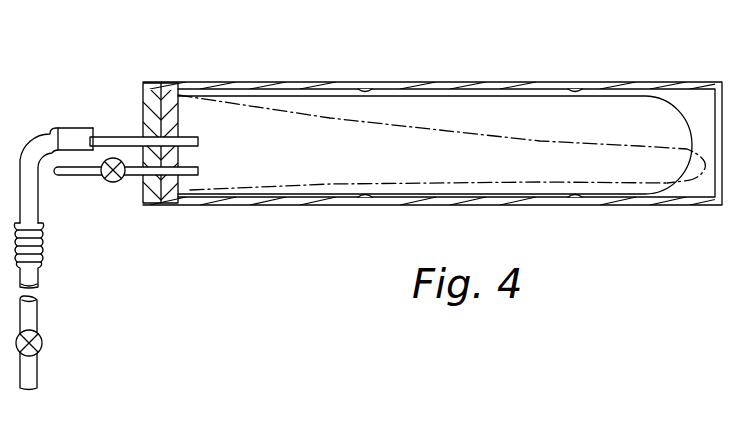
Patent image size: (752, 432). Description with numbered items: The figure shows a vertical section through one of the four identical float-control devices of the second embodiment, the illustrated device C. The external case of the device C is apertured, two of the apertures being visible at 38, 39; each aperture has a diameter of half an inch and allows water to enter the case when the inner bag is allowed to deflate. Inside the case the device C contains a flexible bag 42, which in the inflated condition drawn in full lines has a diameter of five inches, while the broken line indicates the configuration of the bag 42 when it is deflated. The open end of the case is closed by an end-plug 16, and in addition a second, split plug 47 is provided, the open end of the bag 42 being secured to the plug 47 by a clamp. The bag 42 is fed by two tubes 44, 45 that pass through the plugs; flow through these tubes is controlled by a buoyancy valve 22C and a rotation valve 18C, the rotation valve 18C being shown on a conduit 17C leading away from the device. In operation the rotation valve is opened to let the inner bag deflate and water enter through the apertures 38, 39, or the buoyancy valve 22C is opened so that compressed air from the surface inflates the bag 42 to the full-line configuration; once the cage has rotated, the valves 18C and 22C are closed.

The control device C is at (271, 62).
The end-plug 16 is at (143, 102).
The split plug 47 is at (171, 91).
The tube 45 is at (109, 136).
The tube 44 is at (85, 175).
The buoyancy valve 22C is at (114, 182).
The aperture 38 is at (367, 87).
The aperture 39 is at (575, 86).
The flexible bag 42 is at (430, 128).
The rotation valve 18C is at (41, 338).
The conduit 17C is at (27, 379).